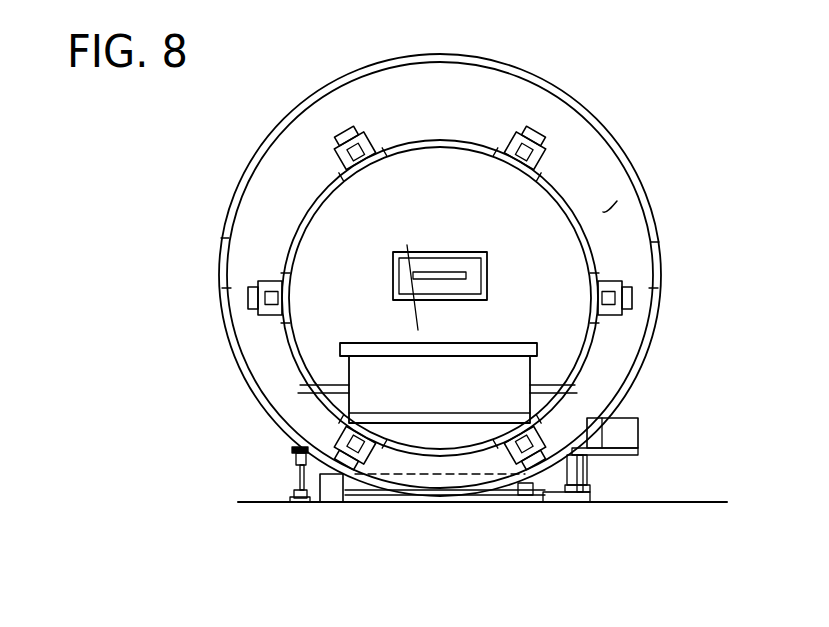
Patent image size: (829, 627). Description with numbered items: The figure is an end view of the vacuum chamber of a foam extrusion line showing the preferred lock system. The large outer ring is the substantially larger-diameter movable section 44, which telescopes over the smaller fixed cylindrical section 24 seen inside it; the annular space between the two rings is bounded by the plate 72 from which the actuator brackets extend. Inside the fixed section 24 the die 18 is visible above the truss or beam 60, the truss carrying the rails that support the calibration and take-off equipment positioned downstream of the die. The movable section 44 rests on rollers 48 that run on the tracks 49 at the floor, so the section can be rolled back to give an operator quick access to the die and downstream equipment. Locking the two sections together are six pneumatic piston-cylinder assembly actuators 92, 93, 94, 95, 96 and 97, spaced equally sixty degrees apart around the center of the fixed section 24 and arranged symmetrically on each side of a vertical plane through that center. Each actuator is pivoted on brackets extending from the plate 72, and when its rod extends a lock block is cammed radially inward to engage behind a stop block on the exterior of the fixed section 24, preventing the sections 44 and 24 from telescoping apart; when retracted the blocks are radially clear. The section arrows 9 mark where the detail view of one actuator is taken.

The section line 9- 9 is at (404, 89).
The die 18 is at (446, 251).
The fixed cylindrical section 24 is at (597, 253).
The movable section 44 is at (628, 143).
The rollers 48 is at (300, 470).
The base plate 49 is at (300, 501).
The truss or beam 60 is at (490, 373).
The plate 72 is at (617, 201).
The pneumatic piston-cylinder assembly actuator 92 is at (337, 143).
The pneumatic piston-cylinder assembly actuator 93 is at (536, 139).
The pneumatic piston-cylinder assembly actuator 94 is at (632, 299).
The pneumatic piston-cylinder assembly actuator 95 is at (528, 456).
The pneumatic piston-cylinder assembly actuator 96 is at (352, 457).
The pneumatic piston-cylinder assembly actuator 97 is at (250, 297).